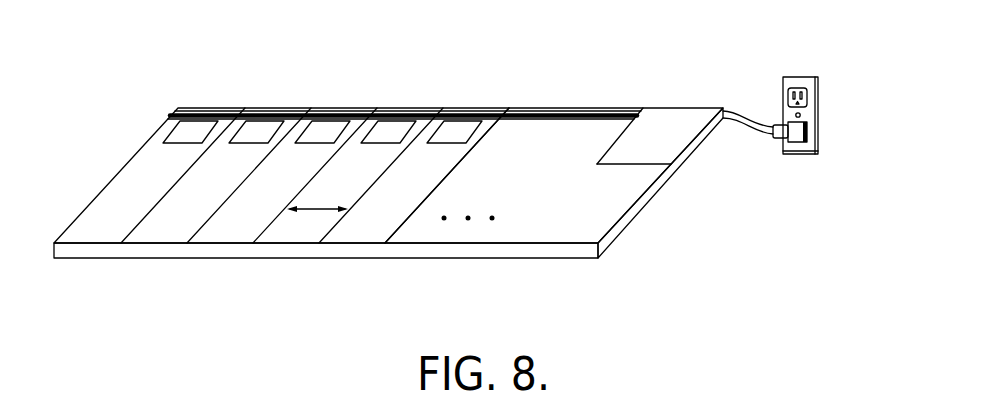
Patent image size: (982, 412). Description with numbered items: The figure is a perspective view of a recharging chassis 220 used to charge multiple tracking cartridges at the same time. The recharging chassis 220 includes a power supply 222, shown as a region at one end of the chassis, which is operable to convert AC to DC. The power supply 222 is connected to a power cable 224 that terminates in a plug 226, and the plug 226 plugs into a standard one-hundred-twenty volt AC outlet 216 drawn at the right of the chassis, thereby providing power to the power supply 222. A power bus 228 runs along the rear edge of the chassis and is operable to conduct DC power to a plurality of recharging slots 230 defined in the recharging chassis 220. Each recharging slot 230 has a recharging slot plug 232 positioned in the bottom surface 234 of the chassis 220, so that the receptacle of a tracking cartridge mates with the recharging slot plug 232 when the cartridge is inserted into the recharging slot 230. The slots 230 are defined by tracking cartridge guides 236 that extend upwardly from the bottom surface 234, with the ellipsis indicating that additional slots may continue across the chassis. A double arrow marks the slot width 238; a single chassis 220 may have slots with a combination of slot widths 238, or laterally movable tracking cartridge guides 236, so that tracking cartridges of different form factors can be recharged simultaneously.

The outlet 216 is at (795, 76).
The recharging chassis 220 is at (78, 258).
The power supply 222 is at (673, 150).
The power cable 224 is at (759, 118).
The plug 226 is at (798, 143).
The power bus 228 is at (572, 108).
The recharging slots 230 is at (222, 222).
The recharging slot plugs 232 is at (200, 120).
The bottom surface 234 is at (368, 229).
The tracking cartridge guides 236 is at (460, 162).
The slot widths 238 is at (318, 209).